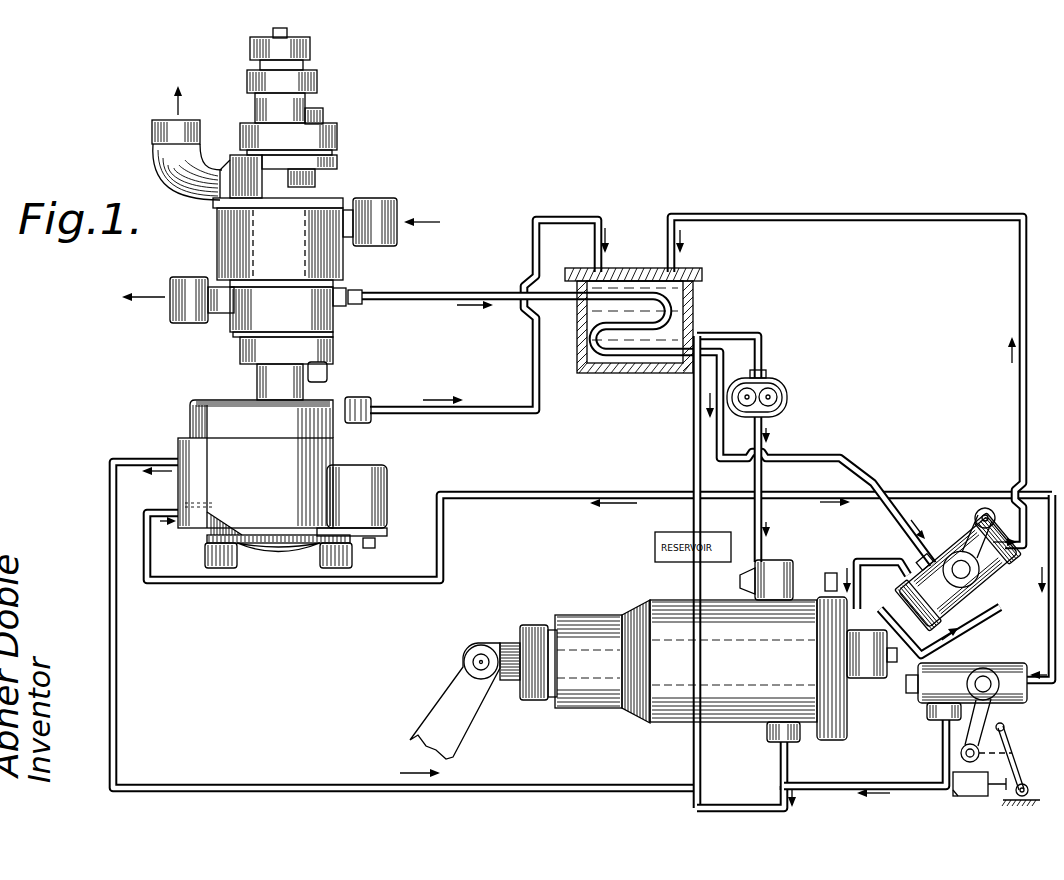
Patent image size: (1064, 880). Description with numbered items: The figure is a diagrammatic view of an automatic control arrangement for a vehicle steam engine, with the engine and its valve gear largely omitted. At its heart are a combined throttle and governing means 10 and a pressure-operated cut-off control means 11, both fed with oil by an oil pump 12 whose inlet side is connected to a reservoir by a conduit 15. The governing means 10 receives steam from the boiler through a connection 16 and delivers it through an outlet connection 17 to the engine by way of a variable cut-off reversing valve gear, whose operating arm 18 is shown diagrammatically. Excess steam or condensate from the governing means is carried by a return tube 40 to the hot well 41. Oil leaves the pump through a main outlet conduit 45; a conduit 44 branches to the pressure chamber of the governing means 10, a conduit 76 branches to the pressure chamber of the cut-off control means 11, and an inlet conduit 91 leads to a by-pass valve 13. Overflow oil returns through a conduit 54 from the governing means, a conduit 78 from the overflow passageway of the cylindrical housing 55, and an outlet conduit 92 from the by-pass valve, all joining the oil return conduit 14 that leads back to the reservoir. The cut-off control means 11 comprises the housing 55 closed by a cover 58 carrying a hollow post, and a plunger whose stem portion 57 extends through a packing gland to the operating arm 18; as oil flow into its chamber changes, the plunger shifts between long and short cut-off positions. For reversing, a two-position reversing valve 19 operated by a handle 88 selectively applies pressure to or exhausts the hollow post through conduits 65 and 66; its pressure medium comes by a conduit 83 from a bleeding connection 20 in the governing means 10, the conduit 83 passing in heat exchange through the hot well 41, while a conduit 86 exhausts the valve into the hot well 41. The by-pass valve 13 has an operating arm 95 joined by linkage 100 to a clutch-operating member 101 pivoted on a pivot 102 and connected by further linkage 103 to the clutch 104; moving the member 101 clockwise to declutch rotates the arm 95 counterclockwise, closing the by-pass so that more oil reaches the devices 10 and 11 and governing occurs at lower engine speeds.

The combined throttle and governing means 10 is at (340, 196).
The connection 16 is at (377, 200).
The outlet connection 17 is at (183, 325).
The bleeding connection 20 is at (352, 292).
The conduit 83 is at (443, 298).
The return tube 40 is at (408, 410).
The hot well 41 is at (700, 300).
The conduit 15 is at (762, 368).
The oil pump 12 is at (777, 384).
The conduit 86 is at (1020, 413).
The conduit 44 is at (595, 495).
The main outlet conduit 45 is at (763, 476).
The conduit 76 is at (762, 507).
The conduit 65 is at (855, 562).
The conduit 66 is at (988, 621).
The inlet conduit 91 is at (1050, 645).
The handle 88 is at (977, 532).
The two-position reversing valve 19 is at (993, 573).
The by-pass valve 13 is at (1026, 664).
The stem portion 57 is at (508, 644).
The pressure-operated cut-off control means 11 is at (648, 600).
The cover 58 is at (848, 712).
The cylindrical housing 55 is at (700, 724).
The operating arm 95 is at (968, 742).
The linkage 100 is at (998, 727).
The clutch-operating member 101 is at (1008, 758).
The pivot 102 is at (1027, 784).
The linkage 103 is at (979, 792).
The clutch 104 is at (953, 790).
The conduit 78 is at (781, 770).
The outlet conduit 92 is at (835, 786).
The oil return conduit 14 is at (792, 795).
The conduit 54 is at (115, 762).
The operating arm 18 is at (428, 713).